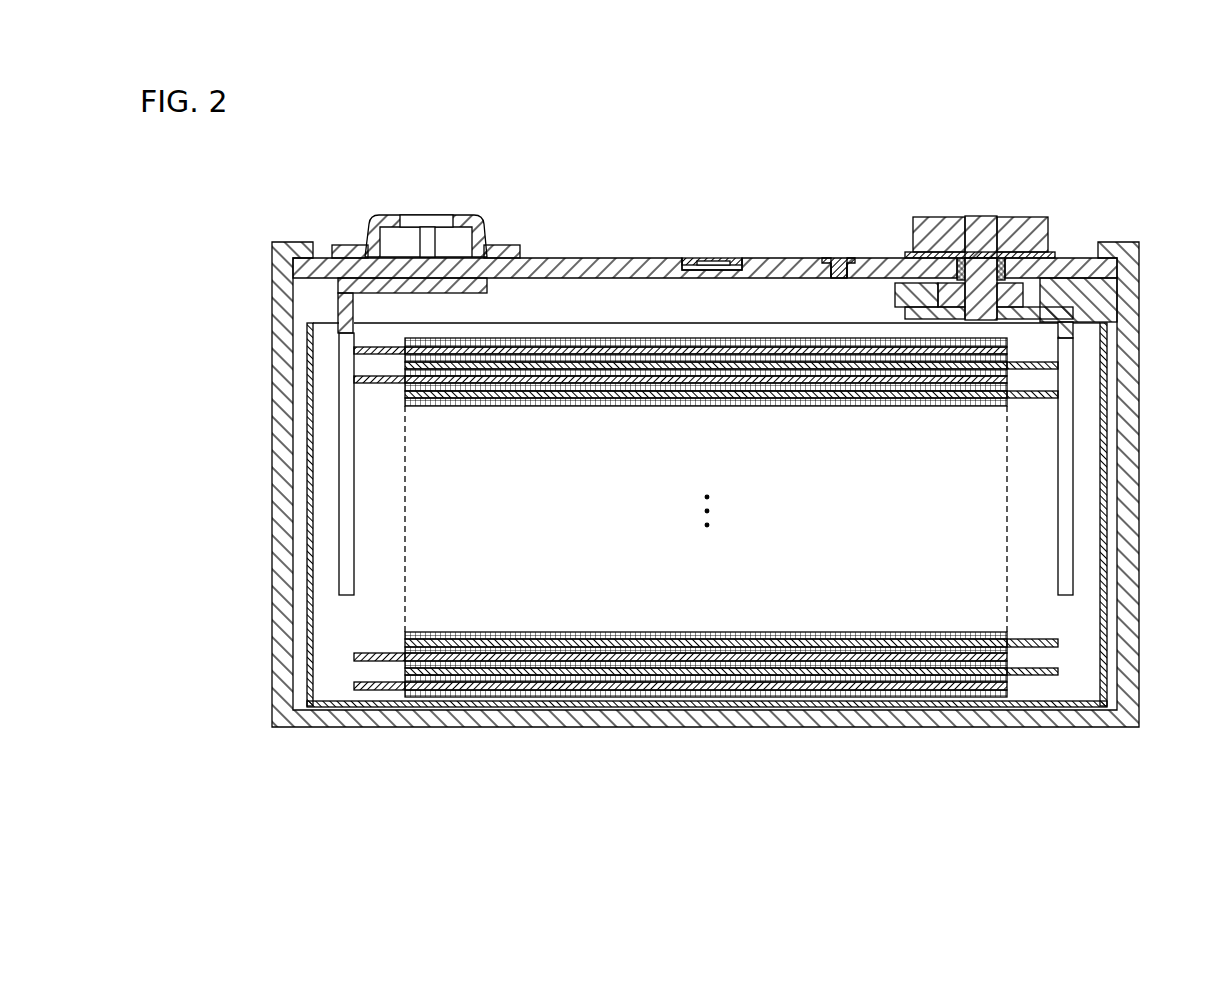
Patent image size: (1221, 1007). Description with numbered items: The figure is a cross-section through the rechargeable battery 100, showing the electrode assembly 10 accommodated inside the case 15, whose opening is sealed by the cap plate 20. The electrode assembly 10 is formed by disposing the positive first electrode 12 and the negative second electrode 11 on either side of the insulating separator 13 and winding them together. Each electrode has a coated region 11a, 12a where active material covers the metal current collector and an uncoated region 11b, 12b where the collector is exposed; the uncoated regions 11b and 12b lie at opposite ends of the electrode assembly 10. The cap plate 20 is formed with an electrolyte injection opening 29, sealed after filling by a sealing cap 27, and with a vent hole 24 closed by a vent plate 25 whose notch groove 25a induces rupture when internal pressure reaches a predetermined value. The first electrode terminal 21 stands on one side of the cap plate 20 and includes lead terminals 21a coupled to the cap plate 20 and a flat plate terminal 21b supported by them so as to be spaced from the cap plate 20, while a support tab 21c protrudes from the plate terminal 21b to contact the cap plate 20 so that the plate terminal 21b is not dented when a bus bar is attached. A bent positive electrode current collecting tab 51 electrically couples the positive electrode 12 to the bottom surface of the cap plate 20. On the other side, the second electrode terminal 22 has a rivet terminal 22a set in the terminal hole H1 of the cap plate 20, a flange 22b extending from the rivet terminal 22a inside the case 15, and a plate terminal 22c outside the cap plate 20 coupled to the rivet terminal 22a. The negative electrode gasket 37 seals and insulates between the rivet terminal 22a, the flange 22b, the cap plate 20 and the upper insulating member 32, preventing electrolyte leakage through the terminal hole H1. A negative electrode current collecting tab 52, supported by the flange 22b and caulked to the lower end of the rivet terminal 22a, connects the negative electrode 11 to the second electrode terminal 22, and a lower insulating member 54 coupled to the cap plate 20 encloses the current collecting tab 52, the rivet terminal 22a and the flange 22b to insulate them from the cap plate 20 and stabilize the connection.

The rechargeable battery 100 is at (713, 113).
The electrode assembly 10 is at (709, 575).
The second electrode 11 is at (735, 587).
The coated region 11a is at (930, 680).
The uncoated region 11b is at (1034, 570).
The first electrode 12 is at (680, 580).
The coated region 12a is at (490, 690).
The uncoated region 12b is at (379, 562).
The separator 13 is at (720, 695).
The case 15 is at (1133, 476).
The cap plate 20 is at (780, 268).
The first electrode terminal 21 is at (425, 360).
The lead terminals 21a is at (370, 240).
The plate terminal 21b is at (460, 222).
The support tab 21c is at (425, 238).
The second electrode terminal 22 is at (1050, 302).
The rivet terminal 22a is at (993, 307).
The flange 22b is at (960, 306).
The plate terminal 22c is at (1033, 226).
The vent hole 24 is at (708, 272).
The vent plate 25 is at (735, 257).
The notch groove 25a is at (708, 257).
The sealing cap 27 is at (842, 262).
The electrolyte injection opening 29 is at (836, 258).
The upper insulating member 32 is at (1050, 252).
The negative electrode gasket 37 is at (948, 230).
The positive electrode current collecting tab 51 is at (338, 452).
The negative electrode current collecting tab 52 is at (1073, 563).
The lower insulating member 54 is at (1105, 296).
The terminal hole H1 is at (988, 238).